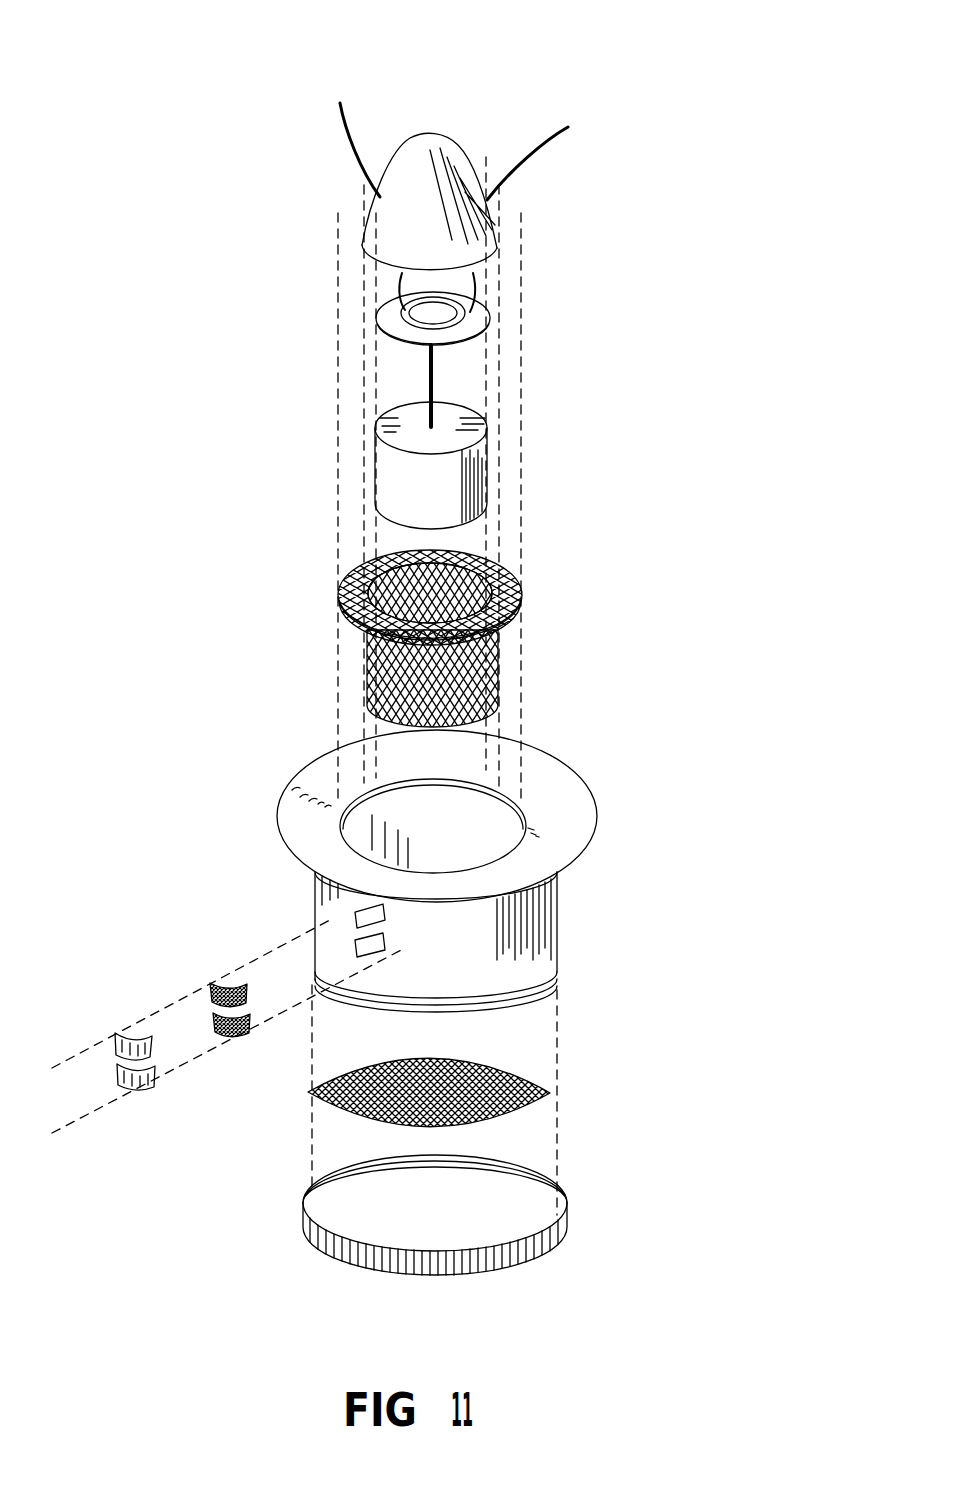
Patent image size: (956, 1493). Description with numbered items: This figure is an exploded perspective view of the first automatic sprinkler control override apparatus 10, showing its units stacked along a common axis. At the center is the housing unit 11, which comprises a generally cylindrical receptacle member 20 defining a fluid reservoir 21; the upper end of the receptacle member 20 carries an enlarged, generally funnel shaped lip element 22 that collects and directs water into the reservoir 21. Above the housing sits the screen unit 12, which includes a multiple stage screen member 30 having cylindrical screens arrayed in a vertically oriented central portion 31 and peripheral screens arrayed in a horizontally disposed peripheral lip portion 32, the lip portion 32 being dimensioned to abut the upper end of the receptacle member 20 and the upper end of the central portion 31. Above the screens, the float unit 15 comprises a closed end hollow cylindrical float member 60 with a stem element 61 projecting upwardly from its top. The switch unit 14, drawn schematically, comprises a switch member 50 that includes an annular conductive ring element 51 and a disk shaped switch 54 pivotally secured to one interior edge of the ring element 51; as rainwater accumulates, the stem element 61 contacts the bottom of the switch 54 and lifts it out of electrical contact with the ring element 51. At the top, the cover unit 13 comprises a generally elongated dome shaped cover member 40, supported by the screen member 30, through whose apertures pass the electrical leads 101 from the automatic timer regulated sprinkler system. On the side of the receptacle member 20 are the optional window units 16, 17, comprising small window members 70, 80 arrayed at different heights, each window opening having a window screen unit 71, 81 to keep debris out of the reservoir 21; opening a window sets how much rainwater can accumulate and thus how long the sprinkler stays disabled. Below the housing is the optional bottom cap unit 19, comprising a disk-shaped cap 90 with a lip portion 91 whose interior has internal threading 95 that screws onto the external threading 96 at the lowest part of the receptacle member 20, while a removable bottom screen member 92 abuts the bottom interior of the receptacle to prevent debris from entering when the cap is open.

The automatic sprinkler control override apparatus 10 is at (605, 370).
The housing unit 11 is at (577, 918).
The screen unit 12 is at (555, 652).
The cover unit 13 is at (476, 100).
The switch unit 14 is at (341, 339).
The float unit 15 is at (338, 500).
The window unit 16 is at (341, 918).
The window unit 17 is at (341, 948).
The bottom cap unit 19 is at (552, 1262).
The receptacle member 20 is at (452, 955).
The fluid reservoir 21 is at (458, 856).
The lip element 22 is at (548, 823).
The multiple stage screen member 30 is at (347, 671).
The central portion 31 is at (503, 672).
The peripheral lip portion 32 is at (523, 583).
The cover member 40 is at (400, 208).
The switch member 50 is at (491, 339).
The conductive ring element 51 is at (400, 344).
The disk shaped switch 54 is at (452, 321).
The float member 60 is at (404, 506).
The stem element 61 is at (437, 377).
The window member 70 is at (128, 1032).
The window screen unit 71 is at (218, 982).
The window member 80 is at (130, 1088).
The window screen unit 81 is at (222, 1034).
The cap 90 is at (423, 1238).
The lip portion 91 is at (557, 1241).
The bottom screen member 92 is at (508, 1113).
The internal threading 95 is at (537, 1190).
The external threading 96 is at (558, 975).
The electrical leads 101 is at (538, 161).